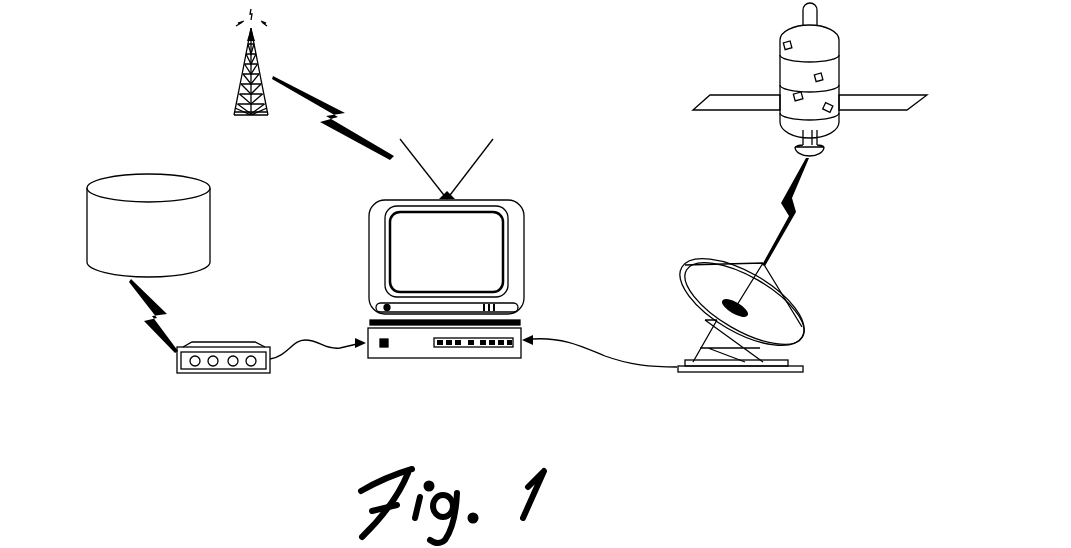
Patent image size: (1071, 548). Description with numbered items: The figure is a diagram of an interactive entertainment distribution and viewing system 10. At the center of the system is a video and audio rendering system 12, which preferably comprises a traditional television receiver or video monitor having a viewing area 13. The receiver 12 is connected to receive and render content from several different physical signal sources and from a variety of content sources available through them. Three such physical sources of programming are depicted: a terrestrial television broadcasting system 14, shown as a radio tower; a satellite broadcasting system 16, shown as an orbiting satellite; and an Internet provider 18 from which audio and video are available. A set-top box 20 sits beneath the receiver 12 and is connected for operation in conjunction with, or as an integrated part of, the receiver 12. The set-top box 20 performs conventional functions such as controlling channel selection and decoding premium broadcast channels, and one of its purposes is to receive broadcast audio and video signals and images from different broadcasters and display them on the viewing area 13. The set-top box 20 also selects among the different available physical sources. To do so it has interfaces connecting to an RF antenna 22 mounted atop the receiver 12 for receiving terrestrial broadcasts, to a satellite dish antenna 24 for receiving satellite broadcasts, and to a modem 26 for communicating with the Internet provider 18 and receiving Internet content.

The interactive entertainment distribution and viewing system 10 is at (486, 52).
The video and audio rendering system 12 is at (517, 200).
The viewing area 13 is at (492, 246).
The terrestrial television broadcasting system 14 is at (245, 50).
The satellite broadcasting system 16 is at (782, 35).
The Internet provider 18 is at (165, 183).
The set-top box 20 is at (400, 353).
The RF antenna 22 is at (413, 153).
The satellite dish antenna 24 is at (683, 270).
The modem 26 is at (223, 342).